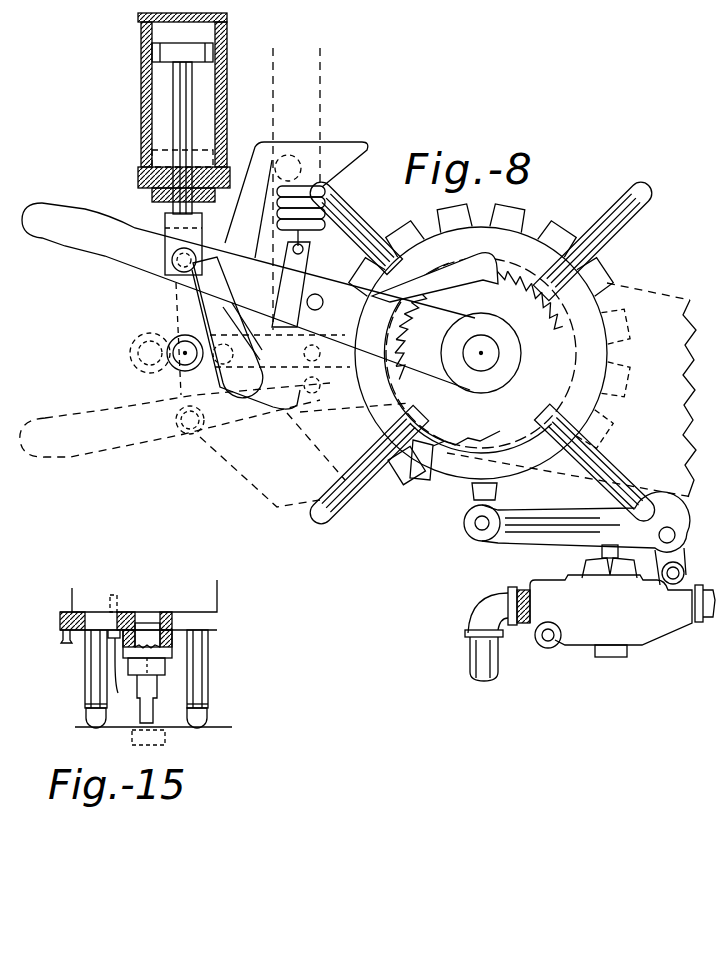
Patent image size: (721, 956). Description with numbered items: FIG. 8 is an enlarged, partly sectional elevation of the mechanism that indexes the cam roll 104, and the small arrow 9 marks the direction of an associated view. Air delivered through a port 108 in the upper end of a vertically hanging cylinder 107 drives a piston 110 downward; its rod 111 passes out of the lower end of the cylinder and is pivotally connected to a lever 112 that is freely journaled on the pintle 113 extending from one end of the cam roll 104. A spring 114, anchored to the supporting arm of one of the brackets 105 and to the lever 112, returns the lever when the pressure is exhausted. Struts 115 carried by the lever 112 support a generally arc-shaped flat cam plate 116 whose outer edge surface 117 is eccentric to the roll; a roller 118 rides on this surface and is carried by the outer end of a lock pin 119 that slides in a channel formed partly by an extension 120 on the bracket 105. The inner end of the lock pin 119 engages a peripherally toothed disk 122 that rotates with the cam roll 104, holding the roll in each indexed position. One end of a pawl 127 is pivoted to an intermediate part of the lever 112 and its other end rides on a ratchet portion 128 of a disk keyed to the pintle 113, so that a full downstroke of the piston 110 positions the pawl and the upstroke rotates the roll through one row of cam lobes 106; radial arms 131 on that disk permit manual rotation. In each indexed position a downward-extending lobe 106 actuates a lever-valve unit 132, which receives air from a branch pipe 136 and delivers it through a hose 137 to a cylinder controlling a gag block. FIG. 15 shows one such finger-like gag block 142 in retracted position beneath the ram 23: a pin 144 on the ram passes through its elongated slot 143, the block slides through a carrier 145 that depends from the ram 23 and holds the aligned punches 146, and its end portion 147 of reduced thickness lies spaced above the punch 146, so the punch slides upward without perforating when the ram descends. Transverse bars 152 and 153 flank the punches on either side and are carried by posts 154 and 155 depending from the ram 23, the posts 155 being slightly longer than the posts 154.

In FIG. 8, the section line arrow 9 is at (86, 286).
In FIG. 15, the ram 23 is at (218, 600).
In FIG. 8, the cam roll 104 is at (470, 470).
In FIG. 8, the bracket 105 is at (638, 288).
In FIG. 8, the cam lobes 106 is at (422, 483).
In FIG. 8, the cylinder 107 is at (141, 90).
In FIG. 8, the port 108 is at (150, 26).
In FIG. 8, the piston 110 is at (213, 52).
In FIG. 8, the rod 111 is at (176, 118).
In FIG. 8, the lever 112 is at (80, 234).
In FIG. 8, the pintle 113 is at (497, 348).
In FIG. 8, the spring 114 is at (321, 95).
In FIG. 8, the struts 115 is at (255, 210).
In FIG. 8, the cam plate 116 is at (345, 142).
In FIG. 8, the outer edge surface 117 is at (192, 296).
In FIG. 8, the roller 118 is at (172, 368).
In FIG. 8, the lock pin 119 is at (219, 345).
In FIG. 8, the extension 120 is at (280, 340).
In FIG. 8, the toothed disk 122 is at (518, 207).
In FIG. 8, the pawl 127 is at (432, 272).
In FIG. 8, the ratchet portion 128 is at (482, 365).
In FIG. 8, the radial arms 131 is at (648, 190).
In FIG. 8, the lever-valve unit 132 is at (622, 619).
In FIG. 8, the air branch pipes 136 is at (498, 665).
In FIG. 8, the hose 137 is at (703, 623).
In FIG. 15, the gag block 142 is at (80, 612).
In FIG. 15, the elongated slot 143 is at (130, 612).
In FIG. 15, the pin 144 is at (125, 667).
In FIG. 15, the carrier 145 is at (172, 640).
In FIG. 15, the punches 146 is at (155, 690).
In FIG. 15, the reduced portion 147 is at (152, 612).
In FIG. 15, the bar 152 is at (86, 718).
In FIG. 15, the bar 153 is at (208, 720).
In FIG. 15, the posts 154 is at (85, 684).
In FIG. 15, the posts 155 is at (208, 650).